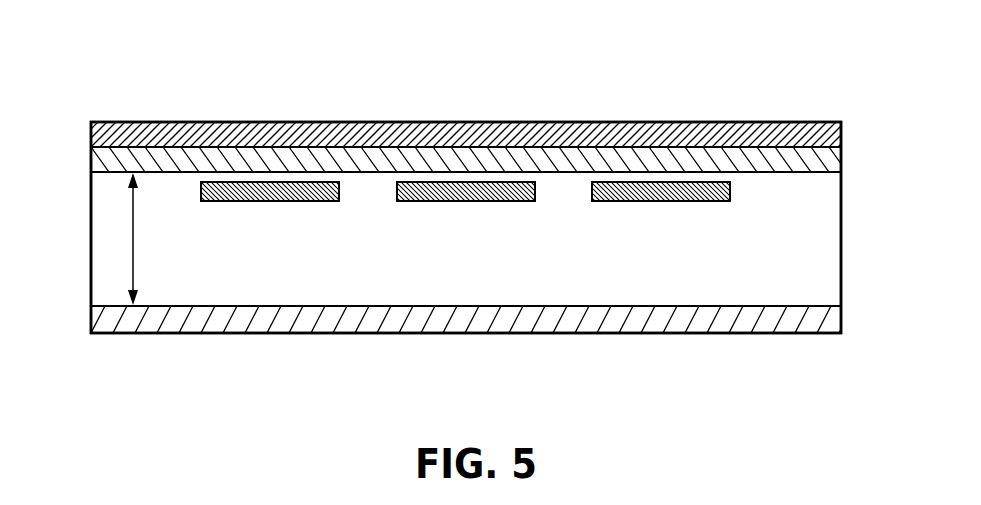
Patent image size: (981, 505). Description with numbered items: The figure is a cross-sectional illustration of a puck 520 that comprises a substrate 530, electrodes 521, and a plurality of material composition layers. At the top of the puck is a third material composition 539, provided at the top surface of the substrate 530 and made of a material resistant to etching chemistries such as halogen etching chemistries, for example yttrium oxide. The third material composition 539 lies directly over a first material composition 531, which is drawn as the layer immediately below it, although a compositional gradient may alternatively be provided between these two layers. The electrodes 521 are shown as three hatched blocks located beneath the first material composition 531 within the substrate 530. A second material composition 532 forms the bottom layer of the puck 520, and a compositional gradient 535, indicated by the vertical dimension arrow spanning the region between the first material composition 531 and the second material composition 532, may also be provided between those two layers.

The puck 520 is at (766, 61).
The substrate 530 is at (798, 287).
The third material composition 539 is at (357, 133).
The first material composition 531 is at (200, 156).
The second material composition 532 is at (195, 327).
The electrodes 521 is at (472, 188).
The compositional gradient 535 is at (135, 243).